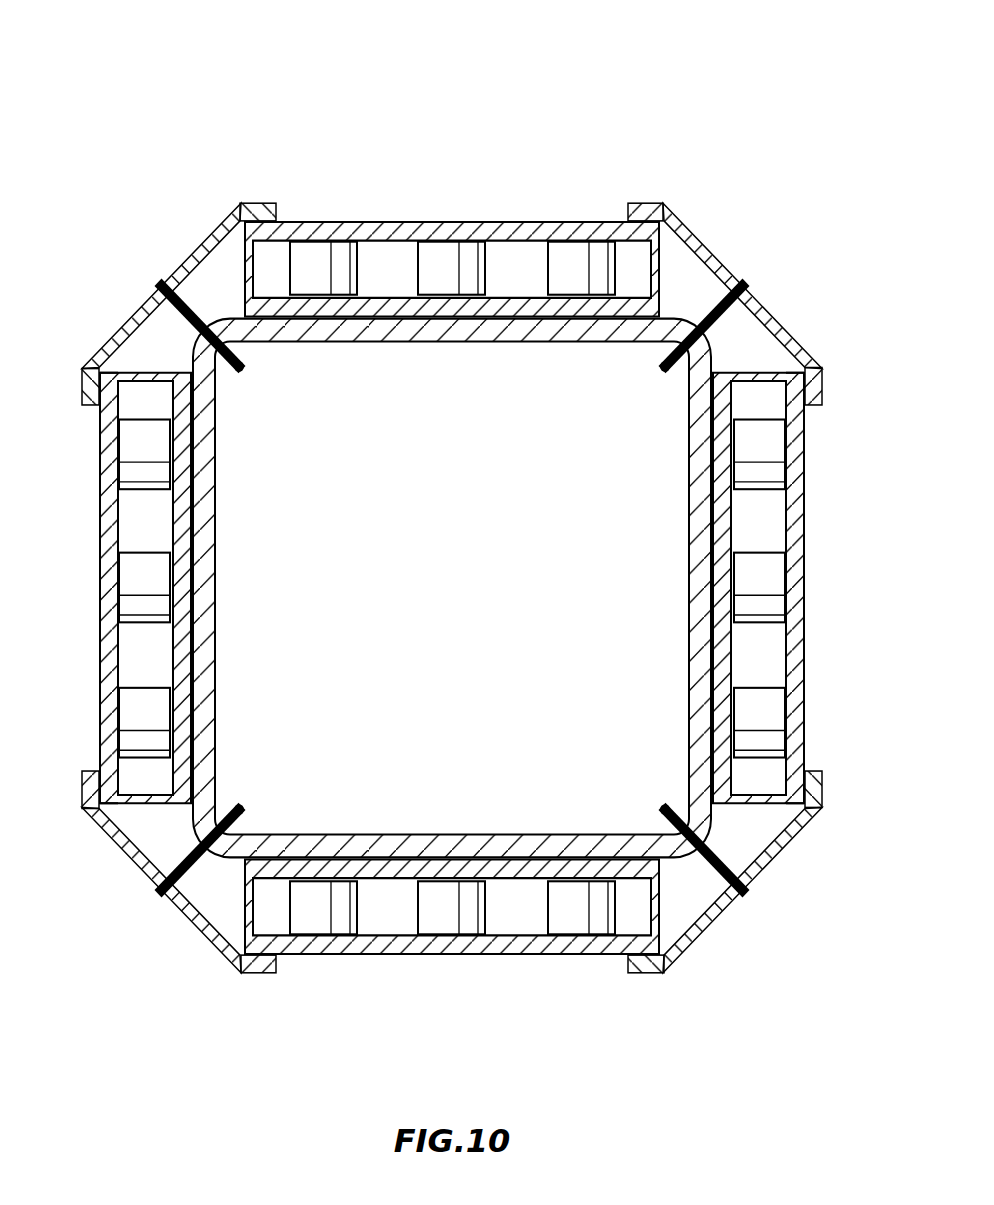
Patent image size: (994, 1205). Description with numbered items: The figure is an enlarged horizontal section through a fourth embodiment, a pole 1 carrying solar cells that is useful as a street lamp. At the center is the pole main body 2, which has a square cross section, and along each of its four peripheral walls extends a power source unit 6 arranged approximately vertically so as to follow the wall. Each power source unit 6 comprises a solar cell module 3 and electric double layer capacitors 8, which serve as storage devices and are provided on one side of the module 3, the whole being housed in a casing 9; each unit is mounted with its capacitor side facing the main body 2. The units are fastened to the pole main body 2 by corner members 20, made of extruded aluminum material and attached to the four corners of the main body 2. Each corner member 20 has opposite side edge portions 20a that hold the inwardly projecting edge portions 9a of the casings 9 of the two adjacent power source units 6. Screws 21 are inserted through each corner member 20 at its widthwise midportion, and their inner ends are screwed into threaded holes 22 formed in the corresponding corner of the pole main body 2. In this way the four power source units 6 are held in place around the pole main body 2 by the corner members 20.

The frame assembly 1 is at (601, 92).
The pole main body 2 is at (505, 346).
The solar cell module 3 is at (446, 238).
The power source unit 6 is at (536, 221).
The electric double layer capacitor 8 is at (320, 262).
The casing 9 is at (410, 326).
The inwardly projecting edge portion 9a is at (262, 210).
The corner member 20 is at (700, 246).
The side edge portion 20a is at (257, 207).
The screw 21 is at (738, 290).
The threaded hole 22 is at (228, 352).